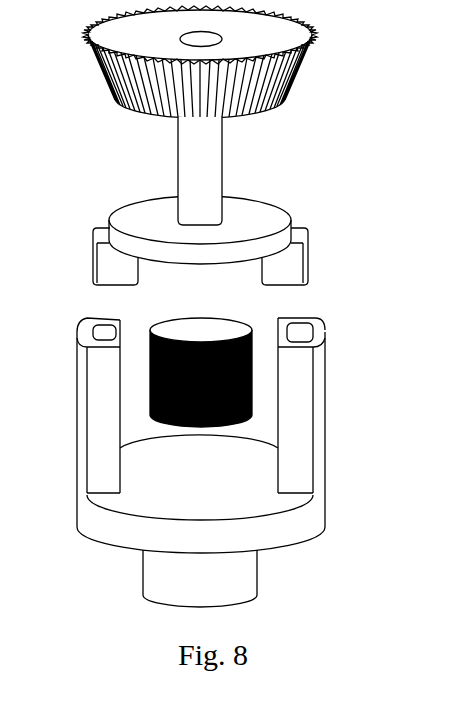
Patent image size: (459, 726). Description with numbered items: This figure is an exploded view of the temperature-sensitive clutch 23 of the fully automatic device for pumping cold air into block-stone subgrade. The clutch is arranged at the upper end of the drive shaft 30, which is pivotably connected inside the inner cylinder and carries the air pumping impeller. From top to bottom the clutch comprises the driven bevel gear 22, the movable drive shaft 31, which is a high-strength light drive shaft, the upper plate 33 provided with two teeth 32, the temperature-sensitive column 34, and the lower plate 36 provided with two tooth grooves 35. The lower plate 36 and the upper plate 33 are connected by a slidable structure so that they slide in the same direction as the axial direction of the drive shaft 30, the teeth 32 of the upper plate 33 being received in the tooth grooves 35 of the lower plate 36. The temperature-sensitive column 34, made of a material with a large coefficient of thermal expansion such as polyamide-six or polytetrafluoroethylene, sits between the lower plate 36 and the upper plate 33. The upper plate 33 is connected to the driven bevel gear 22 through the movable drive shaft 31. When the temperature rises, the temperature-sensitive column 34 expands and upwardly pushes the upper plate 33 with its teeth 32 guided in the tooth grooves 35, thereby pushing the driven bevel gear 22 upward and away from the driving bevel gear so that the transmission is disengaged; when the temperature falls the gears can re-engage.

The driven bevel gear 22 is at (268, 108).
The movable drive shaft 31 is at (188, 156).
The upper plate 33 is at (272, 215).
The teeth 32 is at (303, 259).
The temperature-sensitive clutch 23 is at (302, 306).
The temperature-sensitive column 34 is at (250, 329).
The tooth grooves 35 is at (300, 333).
The lower plate 36 is at (293, 530).
The drive shaft 30 is at (248, 570).